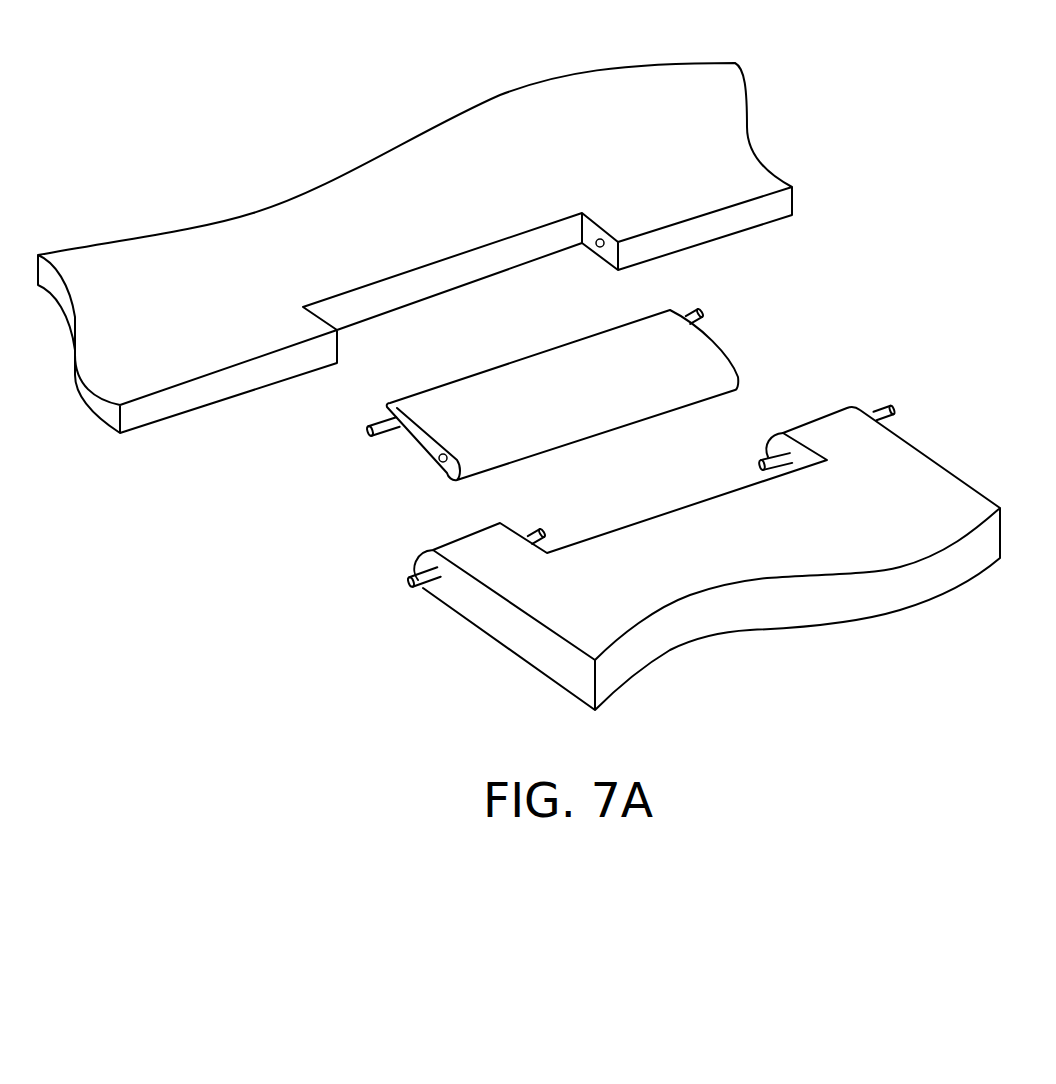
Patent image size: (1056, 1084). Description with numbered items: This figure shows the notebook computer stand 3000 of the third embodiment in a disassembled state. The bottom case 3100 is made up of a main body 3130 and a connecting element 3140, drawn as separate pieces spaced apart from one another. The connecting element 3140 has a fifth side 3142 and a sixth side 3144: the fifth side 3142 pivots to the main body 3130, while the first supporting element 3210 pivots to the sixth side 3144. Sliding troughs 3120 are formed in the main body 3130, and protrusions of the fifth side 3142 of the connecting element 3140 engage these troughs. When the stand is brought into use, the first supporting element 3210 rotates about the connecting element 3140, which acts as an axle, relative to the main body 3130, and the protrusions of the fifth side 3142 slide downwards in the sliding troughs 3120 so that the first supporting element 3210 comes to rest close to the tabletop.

The notebook computer stand 3000 is at (525, 395).
The bottom case 3100 is at (429, 350).
The sliding troughs 3120 is at (606, 239).
The main body 3130 is at (429, 324).
The connecting element 3140 is at (486, 446).
The fifth side 3142 is at (366, 430).
The sixth side 3144 is at (439, 458).
The first supporting element 3210 is at (843, 422).